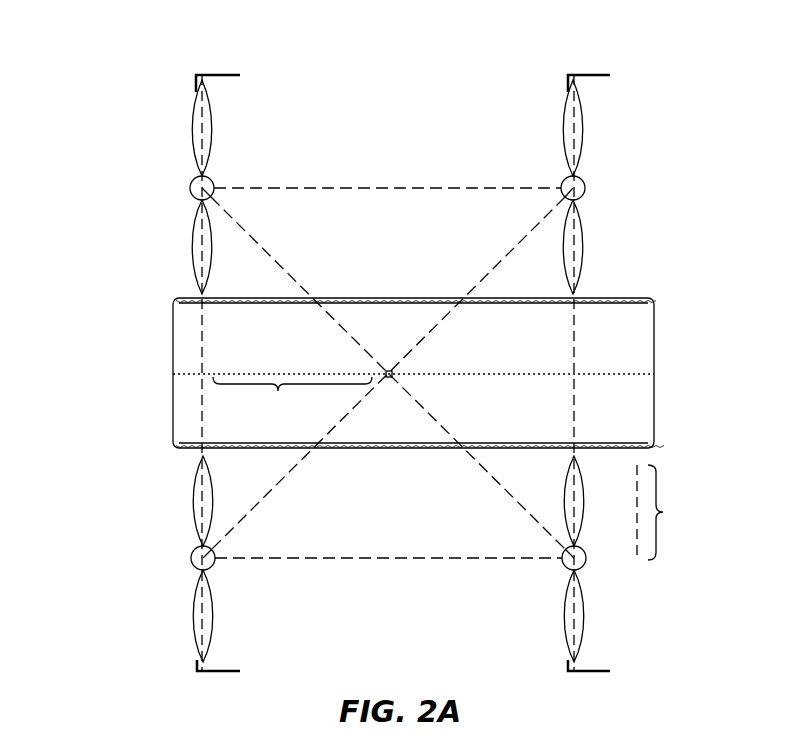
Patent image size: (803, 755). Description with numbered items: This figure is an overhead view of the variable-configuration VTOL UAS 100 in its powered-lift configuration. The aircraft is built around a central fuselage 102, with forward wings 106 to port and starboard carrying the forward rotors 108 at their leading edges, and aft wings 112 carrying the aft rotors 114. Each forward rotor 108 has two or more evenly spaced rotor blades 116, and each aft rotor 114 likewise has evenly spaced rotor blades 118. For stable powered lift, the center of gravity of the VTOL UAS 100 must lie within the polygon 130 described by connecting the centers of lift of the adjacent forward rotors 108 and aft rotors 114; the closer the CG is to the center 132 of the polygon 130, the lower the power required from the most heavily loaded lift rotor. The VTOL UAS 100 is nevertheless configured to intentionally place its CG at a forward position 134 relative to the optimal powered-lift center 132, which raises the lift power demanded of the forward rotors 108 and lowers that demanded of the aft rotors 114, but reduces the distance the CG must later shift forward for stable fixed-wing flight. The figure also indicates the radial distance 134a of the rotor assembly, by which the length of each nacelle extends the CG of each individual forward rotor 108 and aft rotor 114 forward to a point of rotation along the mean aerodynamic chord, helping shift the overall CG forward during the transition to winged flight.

The VTOL UAS 100 is at (78, 54).
The fuselage 102 is at (640, 402).
The forward wings 106 is at (196, 92).
The forward rotors 108 is at (190, 194).
The aft wings 112 is at (568, 92).
The aft rotors 114 is at (586, 196).
The rotor blades 116 is at (207, 132).
The rotor blades 118 is at (575, 148).
The polygon 130 is at (372, 186).
The center of the polygon 132 is at (395, 371).
The forward position of the CG 134 is at (292, 404).
The radial distance 134a is at (699, 512).